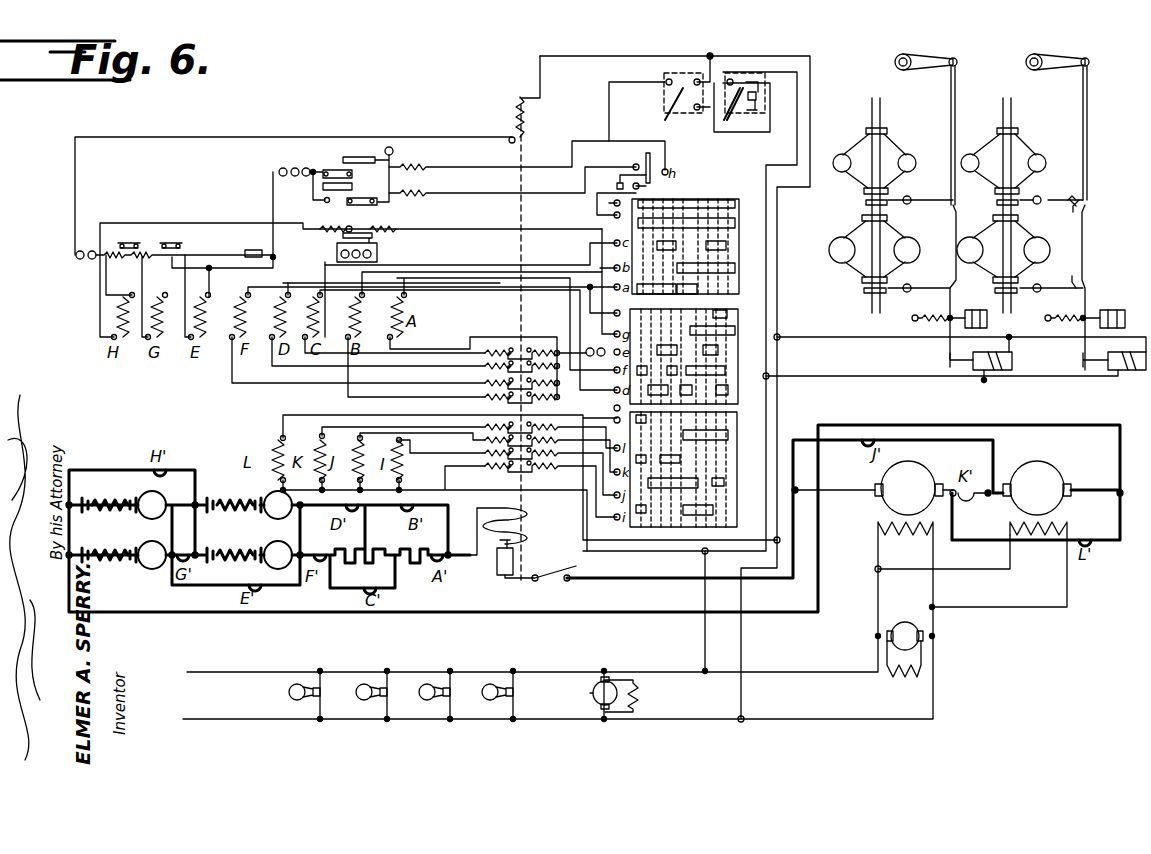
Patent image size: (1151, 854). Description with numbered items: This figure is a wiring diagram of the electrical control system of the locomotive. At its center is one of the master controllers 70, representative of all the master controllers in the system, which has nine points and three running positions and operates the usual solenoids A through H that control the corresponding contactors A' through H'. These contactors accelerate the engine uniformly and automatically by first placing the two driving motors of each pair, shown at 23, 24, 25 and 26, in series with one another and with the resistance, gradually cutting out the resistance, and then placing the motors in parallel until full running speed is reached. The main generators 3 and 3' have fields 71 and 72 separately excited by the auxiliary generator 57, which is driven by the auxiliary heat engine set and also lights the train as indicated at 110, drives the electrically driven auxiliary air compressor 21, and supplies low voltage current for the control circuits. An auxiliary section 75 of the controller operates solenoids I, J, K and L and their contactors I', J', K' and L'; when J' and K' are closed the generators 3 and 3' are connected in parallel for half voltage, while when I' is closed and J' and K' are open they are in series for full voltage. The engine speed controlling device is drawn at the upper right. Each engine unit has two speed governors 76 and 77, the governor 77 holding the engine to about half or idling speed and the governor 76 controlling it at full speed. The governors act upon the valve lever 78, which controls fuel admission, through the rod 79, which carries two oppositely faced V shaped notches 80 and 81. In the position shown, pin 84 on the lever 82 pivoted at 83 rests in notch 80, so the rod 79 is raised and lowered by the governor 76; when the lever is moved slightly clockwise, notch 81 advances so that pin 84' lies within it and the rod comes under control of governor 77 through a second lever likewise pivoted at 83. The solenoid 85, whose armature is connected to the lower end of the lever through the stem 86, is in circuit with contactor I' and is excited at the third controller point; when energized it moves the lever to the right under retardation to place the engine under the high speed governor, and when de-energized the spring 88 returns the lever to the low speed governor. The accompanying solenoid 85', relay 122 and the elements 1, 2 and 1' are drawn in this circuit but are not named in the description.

The master controller 70 is at (685, 229).
The auxiliary section 75 is at (695, 469).
The speed governor 76 is at (938, 160).
The speed governor 77 is at (938, 253).
The valve lever 78 is at (992, 52).
The rod 79 is at (1032, 213).
The V shaped notch 80 is at (1064, 188).
The V shaped notch 81 is at (1100, 287).
The lever 82 is at (960, 248).
The pivot 83 is at (1046, 228).
The pin 84 is at (1094, 201).
The pin 84' is at (1063, 296).
The solenoid 85 is at (1132, 373).
The solenoid 85' is at (995, 360).
The stem 86 is at (1114, 352).
The spring 88 is at (1006, 319).
The relay 122 is at (1047, 308).
The gyroscope governor 1 is at (894, 205).
The gyroscope governor 2 is at (1032, 197).
The conductor 1' is at (960, 333).
The main generator 3 is at (914, 488).
The main generator 3' is at (1037, 488).
The auxiliary air compressor 21 is at (593, 695).
The driving motor 23 is at (152, 505).
The driving motor 24 is at (152, 555).
The driving motor 25 is at (278, 505).
The driving motor 26 is at (278, 555).
The auxiliary generator 57 is at (920, 648).
The generator field 71 is at (596, 620).
The generator field 72 is at (1010, 561).
The train lighting 110 is at (375, 695).